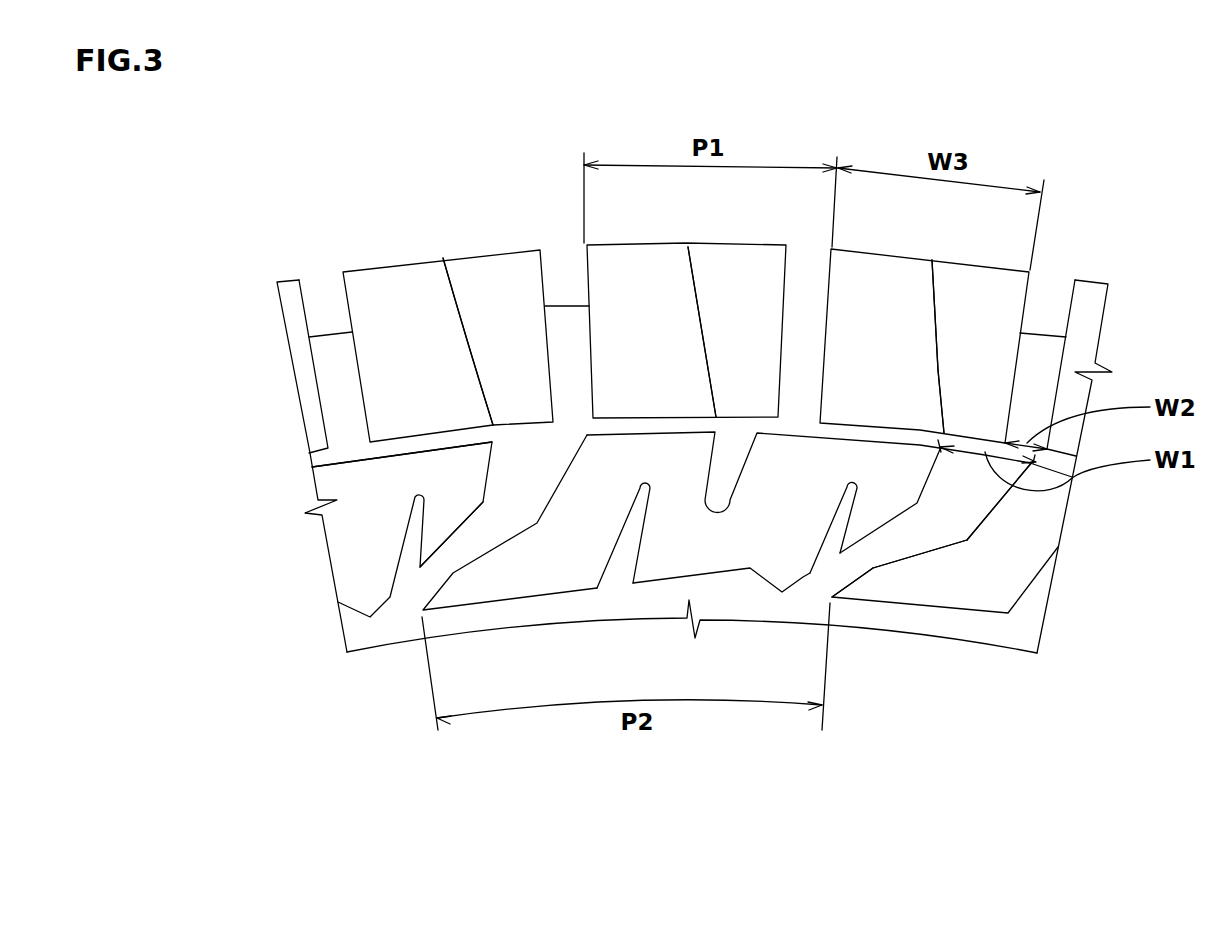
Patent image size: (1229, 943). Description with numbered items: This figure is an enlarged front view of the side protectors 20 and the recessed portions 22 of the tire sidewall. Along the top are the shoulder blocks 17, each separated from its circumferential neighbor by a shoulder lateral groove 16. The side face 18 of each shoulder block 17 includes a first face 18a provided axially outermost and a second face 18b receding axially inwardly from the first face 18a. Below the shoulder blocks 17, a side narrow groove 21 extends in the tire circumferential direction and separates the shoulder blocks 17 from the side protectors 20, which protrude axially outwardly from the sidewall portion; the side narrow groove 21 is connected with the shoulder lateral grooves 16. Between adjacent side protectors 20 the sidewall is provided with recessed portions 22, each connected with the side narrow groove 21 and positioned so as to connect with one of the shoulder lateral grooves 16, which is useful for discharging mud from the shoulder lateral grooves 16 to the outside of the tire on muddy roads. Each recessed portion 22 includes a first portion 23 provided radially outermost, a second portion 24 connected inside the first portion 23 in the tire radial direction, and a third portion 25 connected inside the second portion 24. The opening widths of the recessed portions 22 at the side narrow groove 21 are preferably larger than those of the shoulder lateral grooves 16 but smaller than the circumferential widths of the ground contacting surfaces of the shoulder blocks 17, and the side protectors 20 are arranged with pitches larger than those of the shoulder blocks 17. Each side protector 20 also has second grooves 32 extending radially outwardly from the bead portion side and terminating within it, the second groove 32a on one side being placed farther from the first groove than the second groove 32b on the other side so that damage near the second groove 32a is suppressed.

The shoulder lateral groove 16 is at (338, 360).
The shoulder block 17 is at (373, 262).
The side face 18 is at (664, 256).
The first face 18a is at (410, 340).
The second face 18b is at (500, 337).
The side protector 20 is at (683, 562).
The side narrow groove 21 is at (405, 448).
The recessed portion 22 is at (480, 538).
The first portion 23 is at (965, 496).
The second portion 24 is at (927, 537).
The third portion 25 is at (840, 572).
The second groove 32 is at (677, 587).
The second groove on the one side 32a is at (837, 530).
The second groove on the other side 32b is at (631, 542).